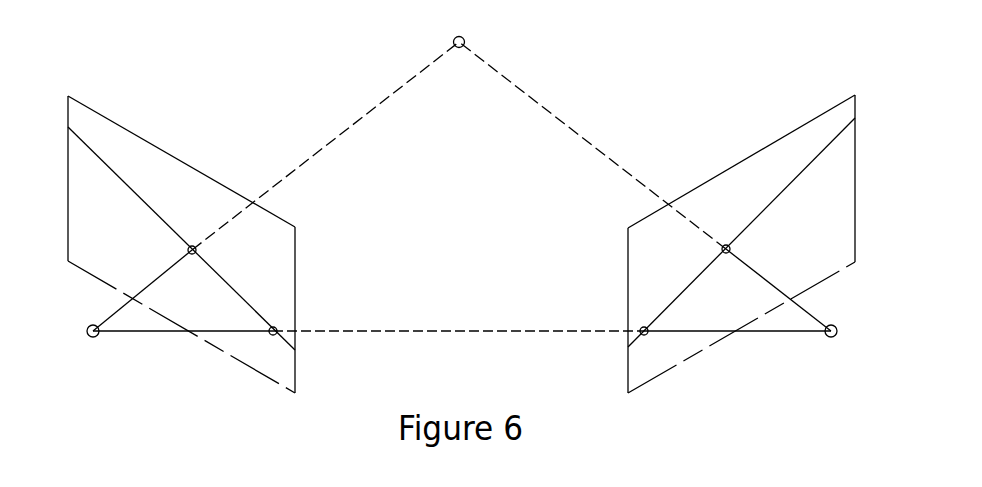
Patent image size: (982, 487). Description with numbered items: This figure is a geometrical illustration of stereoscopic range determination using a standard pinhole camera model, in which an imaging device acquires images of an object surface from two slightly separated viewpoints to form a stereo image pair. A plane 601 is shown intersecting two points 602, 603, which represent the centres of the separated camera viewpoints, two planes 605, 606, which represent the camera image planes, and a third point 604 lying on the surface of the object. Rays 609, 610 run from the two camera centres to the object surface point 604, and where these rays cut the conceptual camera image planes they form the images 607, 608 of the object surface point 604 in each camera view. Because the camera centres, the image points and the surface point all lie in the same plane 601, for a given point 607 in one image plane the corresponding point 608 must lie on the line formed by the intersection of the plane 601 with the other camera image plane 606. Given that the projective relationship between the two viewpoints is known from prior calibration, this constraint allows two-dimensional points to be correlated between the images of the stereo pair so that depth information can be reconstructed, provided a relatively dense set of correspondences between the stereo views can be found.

The plane 601 is at (430, 117).
The point representing centre of separated camera viewpoint 602 is at (96, 338).
The point representing centre of separated camera viewpoint 603 is at (828, 338).
The point on the surface of the object 604 is at (455, 38).
The plane representing camera image plane 605 is at (177, 158).
The plane representing camera image plane 606 is at (745, 158).
The image of object surface point 607 is at (186, 248).
The image of object surface point 608 is at (732, 247).
The ray 609 is at (313, 152).
The ray 610 is at (607, 150).